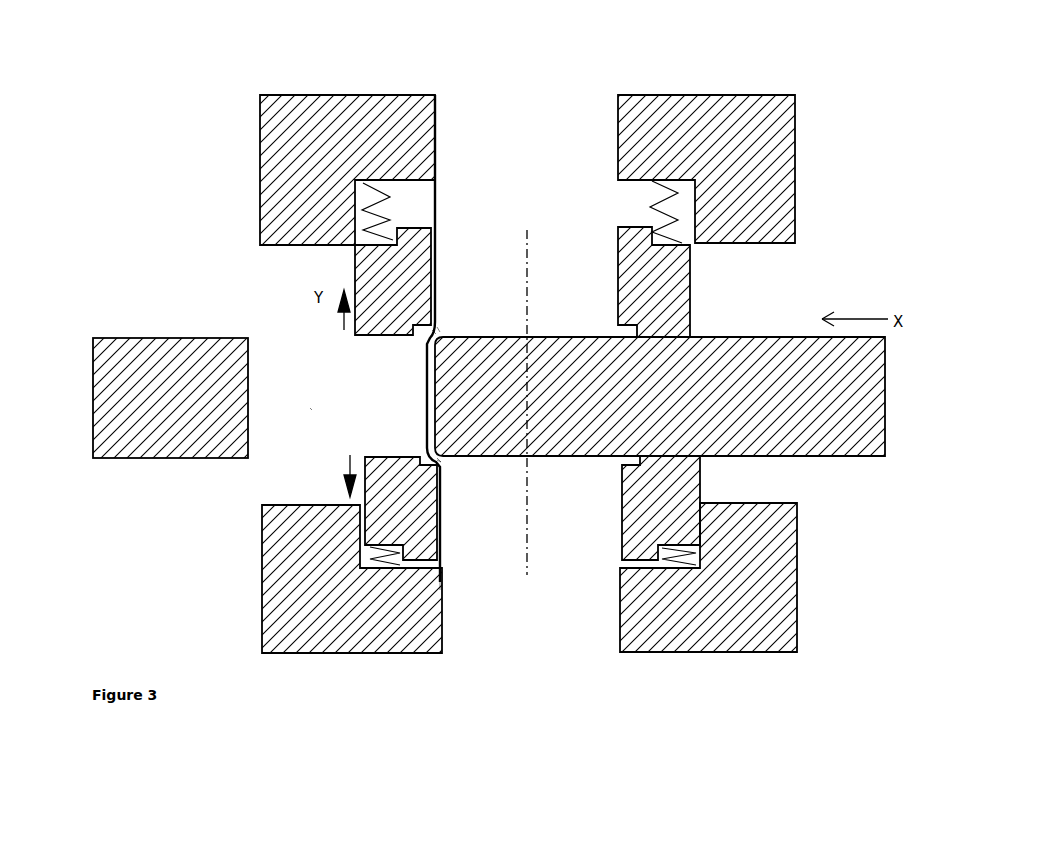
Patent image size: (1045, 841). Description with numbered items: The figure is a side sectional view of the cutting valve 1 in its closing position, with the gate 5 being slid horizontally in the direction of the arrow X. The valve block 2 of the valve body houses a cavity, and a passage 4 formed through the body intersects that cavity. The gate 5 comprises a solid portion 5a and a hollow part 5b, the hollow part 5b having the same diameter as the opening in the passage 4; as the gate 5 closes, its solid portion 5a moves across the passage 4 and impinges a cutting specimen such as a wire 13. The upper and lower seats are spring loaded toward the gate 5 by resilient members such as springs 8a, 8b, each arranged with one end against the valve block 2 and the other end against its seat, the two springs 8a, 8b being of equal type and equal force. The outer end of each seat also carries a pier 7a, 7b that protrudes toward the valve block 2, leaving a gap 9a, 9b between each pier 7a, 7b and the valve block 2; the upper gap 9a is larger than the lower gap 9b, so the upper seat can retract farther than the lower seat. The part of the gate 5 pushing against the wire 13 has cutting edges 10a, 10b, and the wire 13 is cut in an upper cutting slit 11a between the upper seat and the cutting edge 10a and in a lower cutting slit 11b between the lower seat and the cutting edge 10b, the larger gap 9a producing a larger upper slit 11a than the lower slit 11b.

The cutting valve 1 is at (93, 36).
The valve block 2 is at (258, 127).
The passage 4 is at (432, 333).
The gate 5 is at (803, 460).
The solid portion 5a is at (105, 458).
The hollow part 5b is at (310, 408).
The pier of upper seat 7a is at (408, 227).
The pier of lower seat 7b is at (410, 568).
The spring 8a is at (370, 212).
The spring 8b is at (398, 553).
The gap 9a is at (437, 147).
The gap 9b is at (440, 583).
The cutting edge 10a is at (432, 330).
The cutting edge 10b is at (437, 460).
The upper cutting slit 11a is at (437, 327).
The lower cutting slit 11b is at (437, 458).
The wire 13 is at (425, 400).